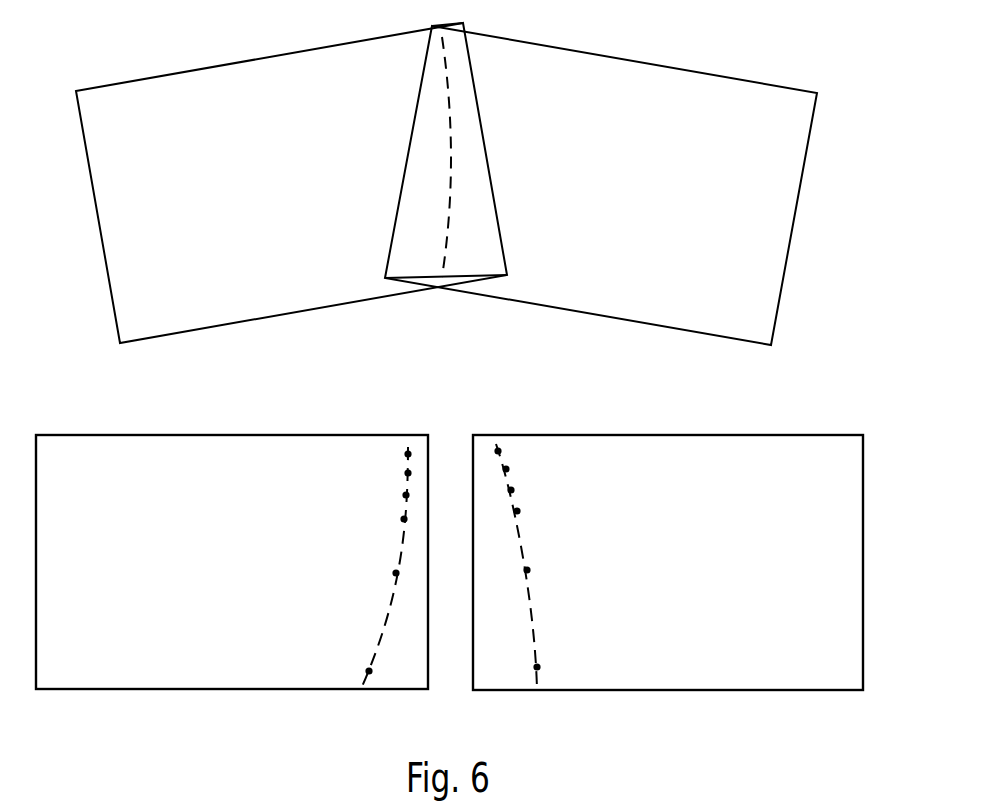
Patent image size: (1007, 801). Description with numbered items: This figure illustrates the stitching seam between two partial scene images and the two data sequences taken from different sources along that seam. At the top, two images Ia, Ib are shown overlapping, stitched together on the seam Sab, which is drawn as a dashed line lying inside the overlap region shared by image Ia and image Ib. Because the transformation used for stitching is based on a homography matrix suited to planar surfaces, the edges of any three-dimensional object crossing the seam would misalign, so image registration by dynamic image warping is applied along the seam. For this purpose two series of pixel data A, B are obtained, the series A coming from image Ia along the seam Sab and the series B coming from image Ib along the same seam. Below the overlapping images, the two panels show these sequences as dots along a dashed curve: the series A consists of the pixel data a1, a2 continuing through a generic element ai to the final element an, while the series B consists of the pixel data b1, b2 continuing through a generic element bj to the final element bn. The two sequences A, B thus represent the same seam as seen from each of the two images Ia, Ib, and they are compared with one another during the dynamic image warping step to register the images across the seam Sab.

The image Ia is at (291, 188).
The image Ib is at (601, 189).
The seam Sab is at (445, 263).
The series of pixel data A is at (232, 577).
The series of pixel data B is at (668, 577).
The first pixel datum of series A a1 is at (396, 451).
The second pixel datum of series A a2 is at (395, 471).
The i-th pixel datum of series A ai is at (383, 574).
The n-th pixel datum of series A an is at (353, 672).
The first pixel datum of series B b1 is at (511, 451).
The second pixel datum of series B b2 is at (519, 471).
The j-th pixel datum of series B bj is at (538, 569).
The n-th pixel datum of series B bn is at (552, 667).